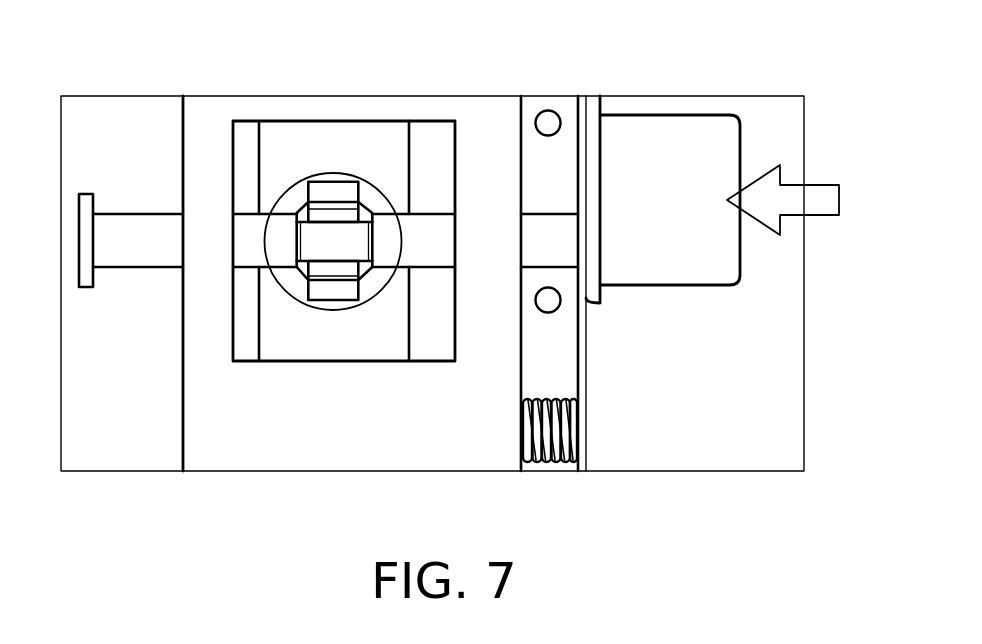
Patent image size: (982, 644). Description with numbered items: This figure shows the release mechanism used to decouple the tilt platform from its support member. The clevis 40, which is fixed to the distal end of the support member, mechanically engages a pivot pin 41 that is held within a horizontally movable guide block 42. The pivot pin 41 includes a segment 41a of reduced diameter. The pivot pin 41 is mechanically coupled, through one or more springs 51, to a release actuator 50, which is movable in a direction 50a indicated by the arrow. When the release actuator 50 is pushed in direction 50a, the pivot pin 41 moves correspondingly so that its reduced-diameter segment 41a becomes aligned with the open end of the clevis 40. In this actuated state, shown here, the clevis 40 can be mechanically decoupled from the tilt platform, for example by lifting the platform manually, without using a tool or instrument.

The clevis 40 is at (331, 179).
The pivot pin 41 is at (276, 207).
The segment 41a is at (349, 241).
The horizontally movable guide block 42 is at (242, 460).
The release actuator 50 is at (665, 156).
The direction 50a is at (823, 197).
The spring 51 is at (553, 464).